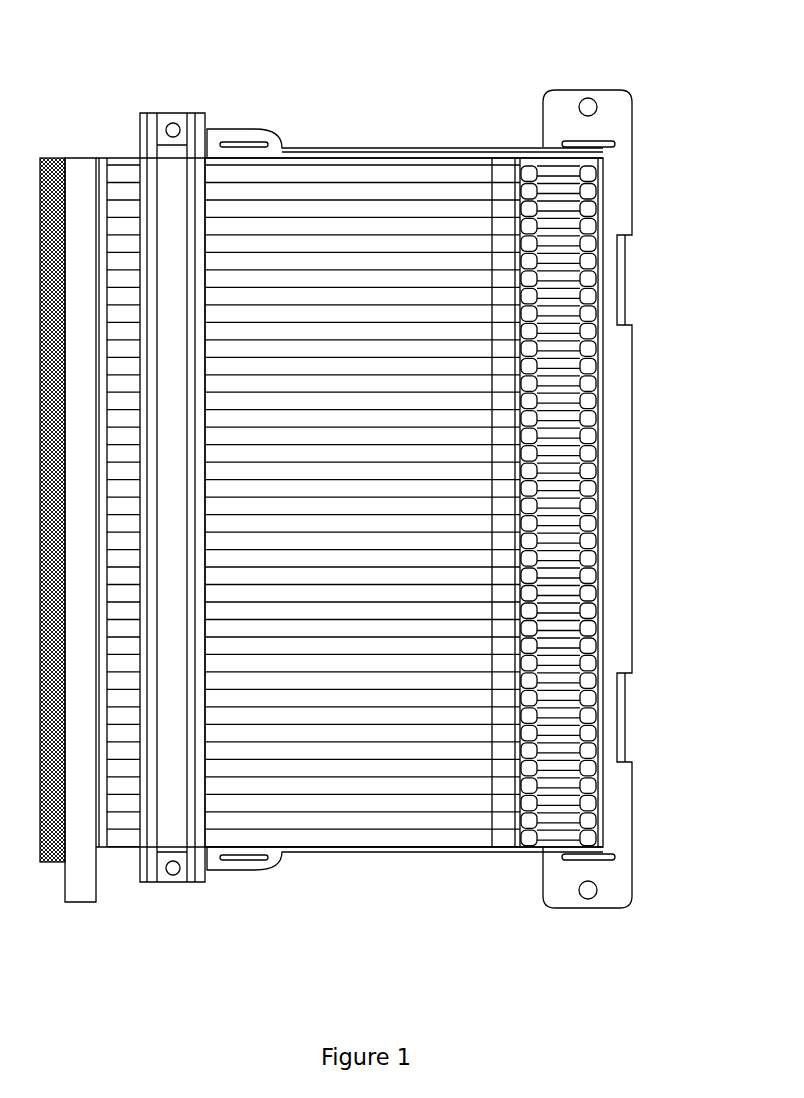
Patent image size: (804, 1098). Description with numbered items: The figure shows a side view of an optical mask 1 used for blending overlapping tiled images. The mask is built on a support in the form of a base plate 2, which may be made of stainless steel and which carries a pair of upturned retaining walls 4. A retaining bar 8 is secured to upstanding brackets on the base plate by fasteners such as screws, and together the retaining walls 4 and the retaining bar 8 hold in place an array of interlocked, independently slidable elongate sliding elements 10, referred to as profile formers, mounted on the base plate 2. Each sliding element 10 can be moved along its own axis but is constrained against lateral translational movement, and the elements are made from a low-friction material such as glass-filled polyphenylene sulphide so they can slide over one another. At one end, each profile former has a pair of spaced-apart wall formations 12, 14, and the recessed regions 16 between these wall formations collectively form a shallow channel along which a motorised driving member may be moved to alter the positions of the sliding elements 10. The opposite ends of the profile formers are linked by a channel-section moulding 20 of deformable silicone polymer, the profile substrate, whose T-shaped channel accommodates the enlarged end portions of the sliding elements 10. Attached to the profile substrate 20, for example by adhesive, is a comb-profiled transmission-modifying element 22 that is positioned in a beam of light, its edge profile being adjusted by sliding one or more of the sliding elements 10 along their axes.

The optical mask 1 is at (665, 450).
The base plate 2 is at (618, 800).
The retaining walls 4 is at (437, 147).
The retaining bar 8 is at (170, 190).
The sliding elements 10 is at (365, 797).
The wall formation 12 is at (533, 712).
The wall formation 14 is at (588, 733).
The recessed regions 16 is at (570, 740).
The channel-section moulding 20 is at (77, 858).
The transmission-modifying element 22 is at (50, 158).